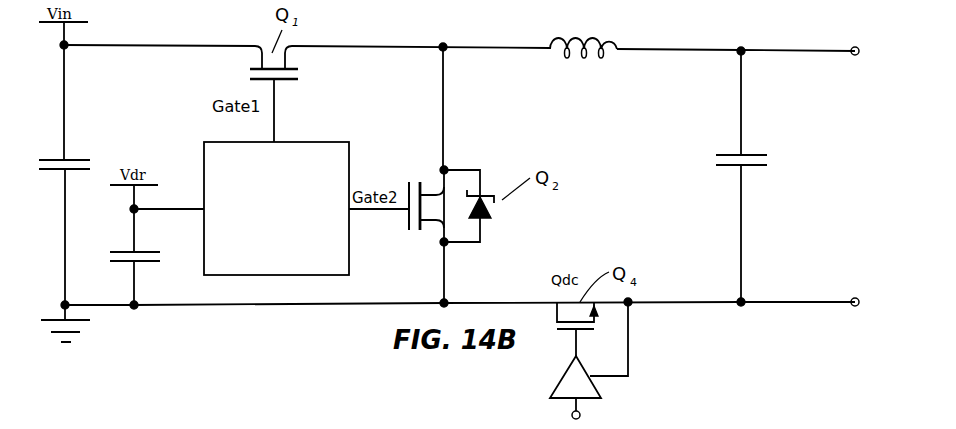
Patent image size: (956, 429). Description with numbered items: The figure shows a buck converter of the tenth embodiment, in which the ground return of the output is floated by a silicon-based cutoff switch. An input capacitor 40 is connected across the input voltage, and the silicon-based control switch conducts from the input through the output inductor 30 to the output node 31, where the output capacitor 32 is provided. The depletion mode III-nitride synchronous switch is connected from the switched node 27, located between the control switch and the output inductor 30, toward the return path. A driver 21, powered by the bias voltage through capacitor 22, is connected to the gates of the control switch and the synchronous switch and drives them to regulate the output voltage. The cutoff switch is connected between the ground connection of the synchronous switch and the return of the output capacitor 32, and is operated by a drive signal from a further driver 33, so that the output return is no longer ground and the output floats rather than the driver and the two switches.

The input capacitor 40 is at (78, 156).
The capacitor 22 is at (122, 252).
The driver 21 is at (305, 141).
The switched node 27 is at (449, 51).
The output inductor 30 is at (578, 65).
The output node 31 is at (746, 56).
The output capacitor 32 is at (772, 162).
The driver 33 is at (556, 380).